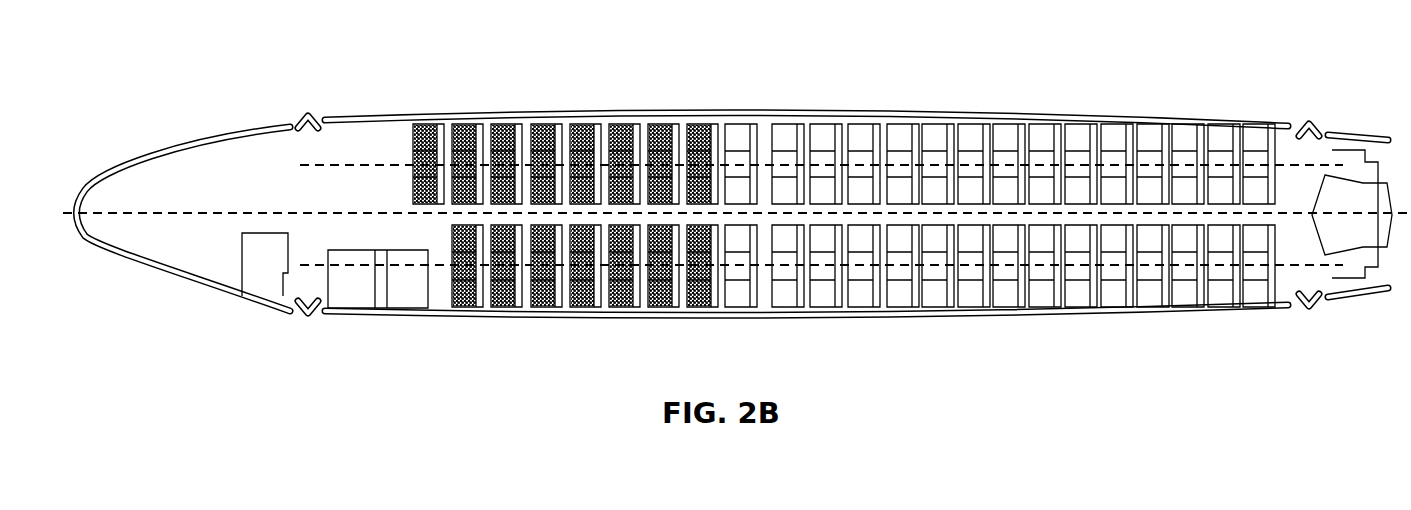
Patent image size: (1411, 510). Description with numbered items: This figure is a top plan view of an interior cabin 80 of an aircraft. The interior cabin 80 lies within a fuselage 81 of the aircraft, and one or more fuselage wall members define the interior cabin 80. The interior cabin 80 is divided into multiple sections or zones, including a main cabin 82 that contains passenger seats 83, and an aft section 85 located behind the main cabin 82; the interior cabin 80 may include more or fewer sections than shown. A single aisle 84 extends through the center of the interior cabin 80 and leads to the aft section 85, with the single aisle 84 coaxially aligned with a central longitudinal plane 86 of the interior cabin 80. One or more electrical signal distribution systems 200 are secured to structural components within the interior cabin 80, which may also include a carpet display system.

The interior cabin 80 is at (327, 52).
The fuselage 81 is at (530, 117).
The main cabin 82 is at (468, 145).
The passenger seats 83 is at (740, 143).
The single aisle 84 is at (863, 213).
The aft section 85 is at (1293, 148).
The central longitudinal plane 86 is at (153, 213).
The electrical signal distribution system 200 is at (367, 163).